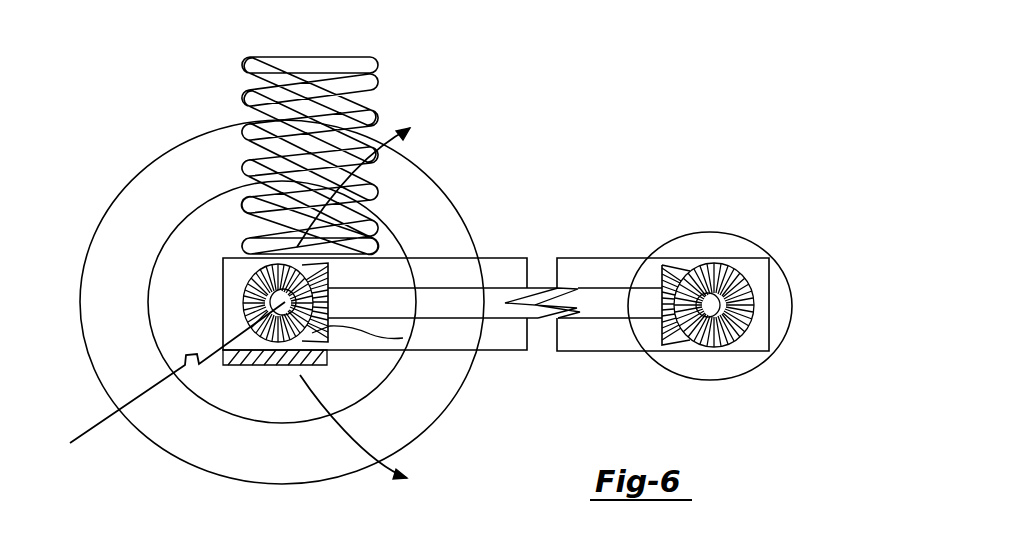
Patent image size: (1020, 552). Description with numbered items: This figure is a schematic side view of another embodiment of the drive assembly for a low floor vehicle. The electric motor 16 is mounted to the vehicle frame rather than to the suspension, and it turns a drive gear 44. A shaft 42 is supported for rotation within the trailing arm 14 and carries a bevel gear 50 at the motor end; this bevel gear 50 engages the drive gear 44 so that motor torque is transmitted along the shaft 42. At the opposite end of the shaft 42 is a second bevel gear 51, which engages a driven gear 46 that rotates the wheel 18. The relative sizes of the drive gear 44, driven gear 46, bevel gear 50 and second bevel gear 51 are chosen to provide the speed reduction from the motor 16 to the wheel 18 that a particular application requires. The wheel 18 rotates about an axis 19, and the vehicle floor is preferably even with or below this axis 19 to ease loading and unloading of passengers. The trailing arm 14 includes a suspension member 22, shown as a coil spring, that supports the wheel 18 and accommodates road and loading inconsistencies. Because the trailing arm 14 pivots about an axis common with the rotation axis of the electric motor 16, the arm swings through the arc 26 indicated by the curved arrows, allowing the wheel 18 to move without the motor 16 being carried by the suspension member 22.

The trailing arm 14 is at (450, 272).
The electric motor 16 is at (690, 233).
The wheel 18 is at (113, 190).
The axis 19 is at (162, 390).
The suspension member 22 is at (309, 56).
The arc 26 is at (303, 393).
The shaft 42 is at (482, 284).
The drive gear 44 is at (752, 278).
The driven gear 46 is at (240, 320).
The bevel gear 50 is at (660, 333).
The second bevel gear 51 is at (369, 332).